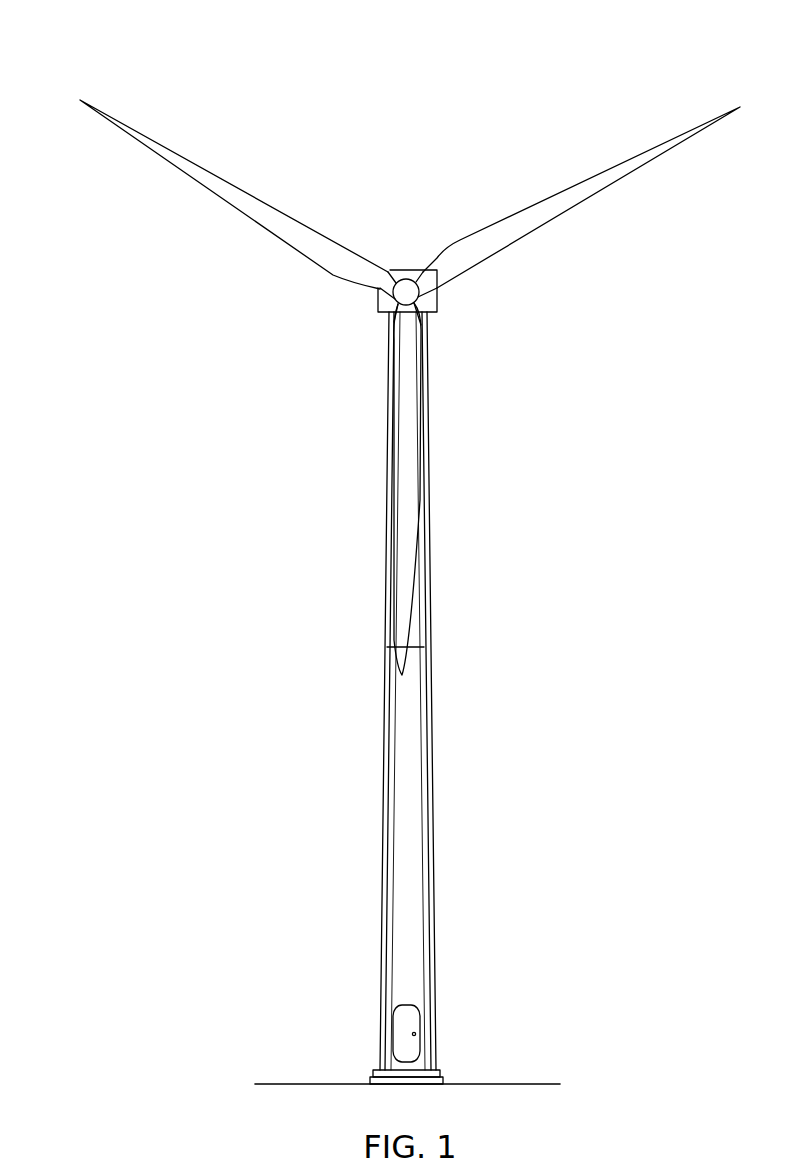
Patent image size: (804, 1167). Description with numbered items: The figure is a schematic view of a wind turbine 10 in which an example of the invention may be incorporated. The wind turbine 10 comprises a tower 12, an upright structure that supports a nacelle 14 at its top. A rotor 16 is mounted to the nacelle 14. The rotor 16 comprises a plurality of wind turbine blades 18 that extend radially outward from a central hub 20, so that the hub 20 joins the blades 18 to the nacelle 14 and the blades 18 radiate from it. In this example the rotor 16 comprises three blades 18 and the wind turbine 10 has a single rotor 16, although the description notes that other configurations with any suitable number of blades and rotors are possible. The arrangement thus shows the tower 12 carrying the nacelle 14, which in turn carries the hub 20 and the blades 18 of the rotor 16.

The wind turbine 10 is at (631, 89).
The tower 12 is at (418, 747).
The nacelle 14 is at (436, 314).
The rotor 16 is at (364, 322).
The wind turbine blades 18 is at (307, 232).
The hub 20 is at (413, 285).